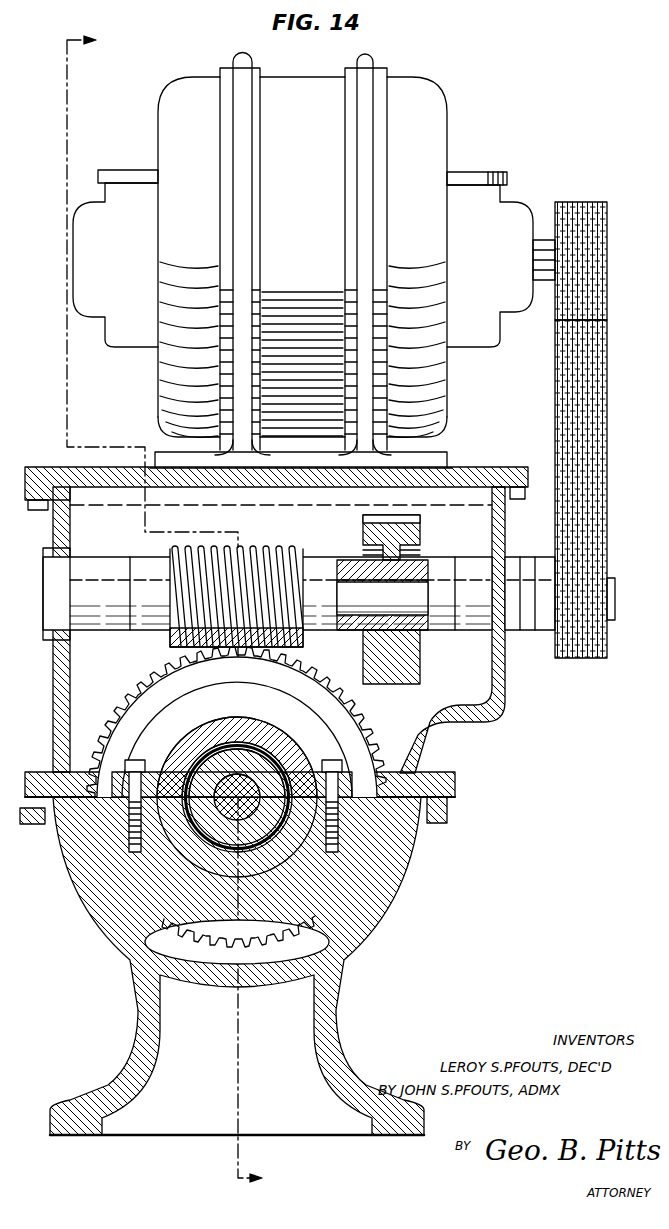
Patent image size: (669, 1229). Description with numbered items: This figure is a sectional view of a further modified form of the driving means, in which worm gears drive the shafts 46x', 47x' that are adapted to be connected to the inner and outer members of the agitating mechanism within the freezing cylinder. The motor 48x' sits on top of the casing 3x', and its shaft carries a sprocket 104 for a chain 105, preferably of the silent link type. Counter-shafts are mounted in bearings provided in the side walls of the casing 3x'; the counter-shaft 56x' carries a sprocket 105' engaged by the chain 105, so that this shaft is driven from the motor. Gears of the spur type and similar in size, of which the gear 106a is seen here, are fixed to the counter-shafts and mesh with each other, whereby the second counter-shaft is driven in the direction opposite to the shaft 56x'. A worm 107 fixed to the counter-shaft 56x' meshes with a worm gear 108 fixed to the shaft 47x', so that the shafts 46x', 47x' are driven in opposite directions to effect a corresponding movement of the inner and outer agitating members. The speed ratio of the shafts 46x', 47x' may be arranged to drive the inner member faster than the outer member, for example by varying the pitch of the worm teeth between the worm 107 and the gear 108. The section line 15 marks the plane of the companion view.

The section line 15- 15 is at (157, 610).
The motor 48x' is at (314, 261).
The sprocket 104 is at (597, 300).
The chain 105 is at (601, 489).
The sprocket 105' is at (626, 628).
The worm 107 is at (262, 553).
The counter-shaft 56x' is at (402, 583).
The gear 106a is at (420, 684).
The worm gear 108 is at (358, 712).
The shaft 46x' is at (237, 783).
The shaft 47x' is at (255, 780).
The casing 3x' is at (274, 801).